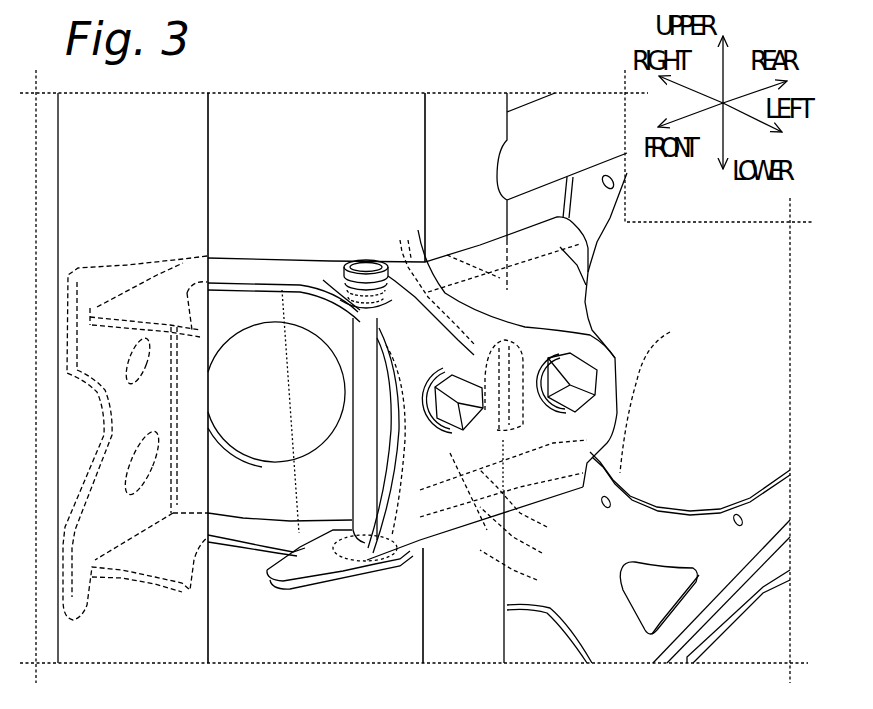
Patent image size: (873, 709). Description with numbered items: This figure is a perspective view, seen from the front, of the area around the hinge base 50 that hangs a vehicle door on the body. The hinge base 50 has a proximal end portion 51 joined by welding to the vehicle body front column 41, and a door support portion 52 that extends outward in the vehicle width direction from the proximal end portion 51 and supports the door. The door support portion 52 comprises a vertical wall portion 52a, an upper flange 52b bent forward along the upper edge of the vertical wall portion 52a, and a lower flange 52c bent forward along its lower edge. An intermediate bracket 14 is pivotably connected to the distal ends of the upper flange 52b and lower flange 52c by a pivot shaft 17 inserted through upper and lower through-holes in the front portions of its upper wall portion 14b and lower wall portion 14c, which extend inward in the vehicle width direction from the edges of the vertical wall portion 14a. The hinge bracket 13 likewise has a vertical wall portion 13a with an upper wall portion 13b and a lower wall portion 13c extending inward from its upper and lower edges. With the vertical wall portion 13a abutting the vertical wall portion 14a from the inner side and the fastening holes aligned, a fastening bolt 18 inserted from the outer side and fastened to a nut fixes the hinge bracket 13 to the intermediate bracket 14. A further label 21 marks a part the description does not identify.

The hinge bracket 13 is at (588, 518).
The vertical wall portion 13a is at (529, 537).
The upper wall portion 13b is at (532, 506).
The lower wall portion 13c is at (526, 571).
The intermediate bracket 14 is at (683, 243).
The vertical wall portion 14a is at (613, 313).
The upper wall portion 14b is at (563, 218).
The lower wall portion 14c is at (670, 332).
The pivot shaft 17 is at (365, 262).
The fastening bolt 18 is at (433, 281).
The strut tower panel 21 is at (447, 152).
The vehicle body front column 41 is at (203, 137).
The hinge base 50 is at (238, 558).
The proximal end portion 51 is at (117, 242).
The door support portion 52 is at (234, 168).
The vertical wall portion 52a is at (243, 273).
The upper flange 52b is at (245, 303).
The lower flange 52c is at (280, 300).